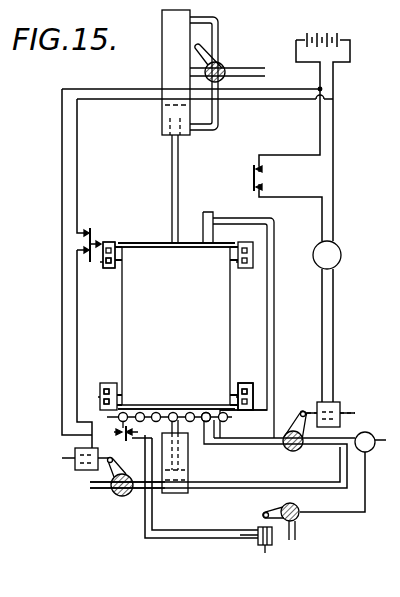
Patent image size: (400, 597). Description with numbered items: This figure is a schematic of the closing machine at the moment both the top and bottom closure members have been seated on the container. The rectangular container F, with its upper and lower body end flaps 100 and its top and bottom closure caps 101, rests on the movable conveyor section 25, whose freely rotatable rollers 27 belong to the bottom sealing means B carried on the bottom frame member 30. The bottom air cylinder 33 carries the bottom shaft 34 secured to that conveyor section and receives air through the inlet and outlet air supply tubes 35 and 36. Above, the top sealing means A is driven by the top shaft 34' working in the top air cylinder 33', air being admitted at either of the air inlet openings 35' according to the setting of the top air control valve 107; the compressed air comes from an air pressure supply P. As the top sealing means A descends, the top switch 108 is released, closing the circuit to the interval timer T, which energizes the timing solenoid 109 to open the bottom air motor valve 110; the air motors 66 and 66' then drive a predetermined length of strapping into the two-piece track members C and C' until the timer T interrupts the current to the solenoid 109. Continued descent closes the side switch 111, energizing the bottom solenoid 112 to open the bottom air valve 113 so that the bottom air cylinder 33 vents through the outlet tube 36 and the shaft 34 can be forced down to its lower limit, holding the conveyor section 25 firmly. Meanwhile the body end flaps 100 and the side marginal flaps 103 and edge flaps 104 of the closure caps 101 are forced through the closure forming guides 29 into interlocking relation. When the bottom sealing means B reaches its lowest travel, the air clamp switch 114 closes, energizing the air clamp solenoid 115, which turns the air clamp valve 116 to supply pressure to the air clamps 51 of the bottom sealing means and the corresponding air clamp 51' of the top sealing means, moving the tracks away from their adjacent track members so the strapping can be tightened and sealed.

The top air cylinder 33' is at (163, 70).
The top and bottom air inlet openings 35' is at (232, 219).
The air clamp solenoid 115 is at (264, 0).
The top air control valve 107 is at (222, 62).
The top shaft 34' is at (192, 189).
The top switch 108 is at (268, 179).
The air motor 66' is at (212, 215).
The contact box 51' is at (104, 241).
The side switch 111 is at (80, 244).
The two-piece top track unit C' is at (73, 269).
The top sealing means A is at (142, 241).
The bottom frame member 30 is at (153, 244).
The top and bottom closure caps 101 is at (167, 249).
The closure forming guides 29 is at (109, 270).
The side marginal flaps 103 is at (245, 269).
The rectangular container F is at (128, 329).
The edge flaps 104 is at (116, 387).
The upper and lower body end flaps 100 is at (116, 400).
The movable conveyor section 25 is at (168, 410).
The rollers 27 is at (202, 410).
The bottom sealing means B is at (256, 392).
The two-piece track member C is at (271, 383).
The air clamps 51 is at (268, 396).
The timing solenoid 109 is at (338, 403).
The inlet air supply tube 35 is at (243, 420).
The air motor 66 is at (224, 439).
The bottom air motor valve 110 is at (290, 452).
The bottom shaft 34 is at (189, 442).
The air clamp switch 114 is at (126, 442).
The bottom solenoid 112 is at (75, 463).
The outlet air supply tube 36 is at (98, 490).
The bottom air valve 113 is at (116, 496).
The bottom air cylinder 33 is at (175, 475).
The air clamp valve 116 is at (281, 501).
The pump P is at (365, 442).
The interval timer T is at (327, 255).